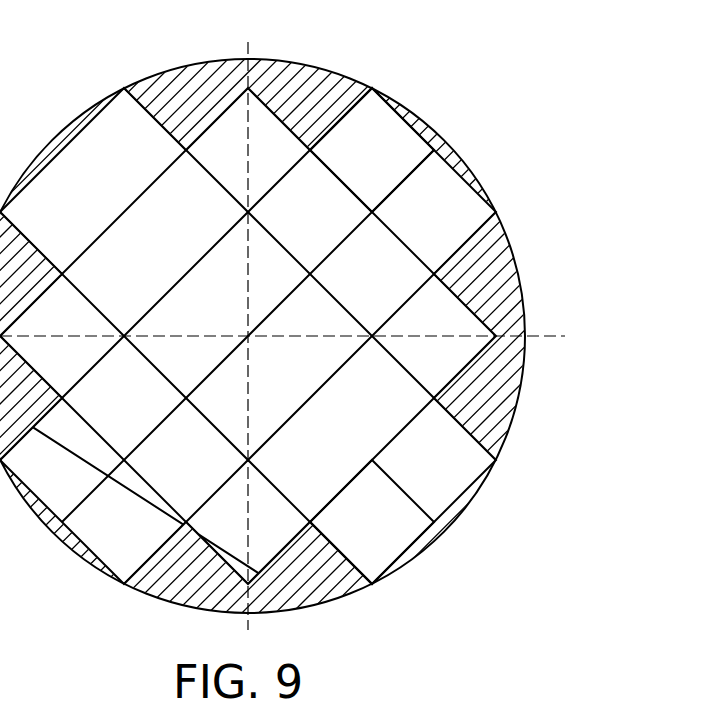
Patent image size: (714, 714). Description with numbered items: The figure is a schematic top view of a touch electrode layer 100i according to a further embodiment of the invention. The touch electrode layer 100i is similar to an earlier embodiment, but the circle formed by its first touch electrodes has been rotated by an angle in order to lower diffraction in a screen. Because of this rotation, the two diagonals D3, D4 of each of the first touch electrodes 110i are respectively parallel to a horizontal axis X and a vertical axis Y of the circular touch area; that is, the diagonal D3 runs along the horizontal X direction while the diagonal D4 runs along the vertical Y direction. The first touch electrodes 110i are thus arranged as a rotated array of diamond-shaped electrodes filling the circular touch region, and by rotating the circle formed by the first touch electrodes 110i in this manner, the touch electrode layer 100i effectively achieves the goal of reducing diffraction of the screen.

The touch electrode layer 100i is at (592, 635).
The first touch electrode 110i is at (428, 201).
The diagonal D3 is at (311, 339).
The diagonal D4 is at (275, 325).